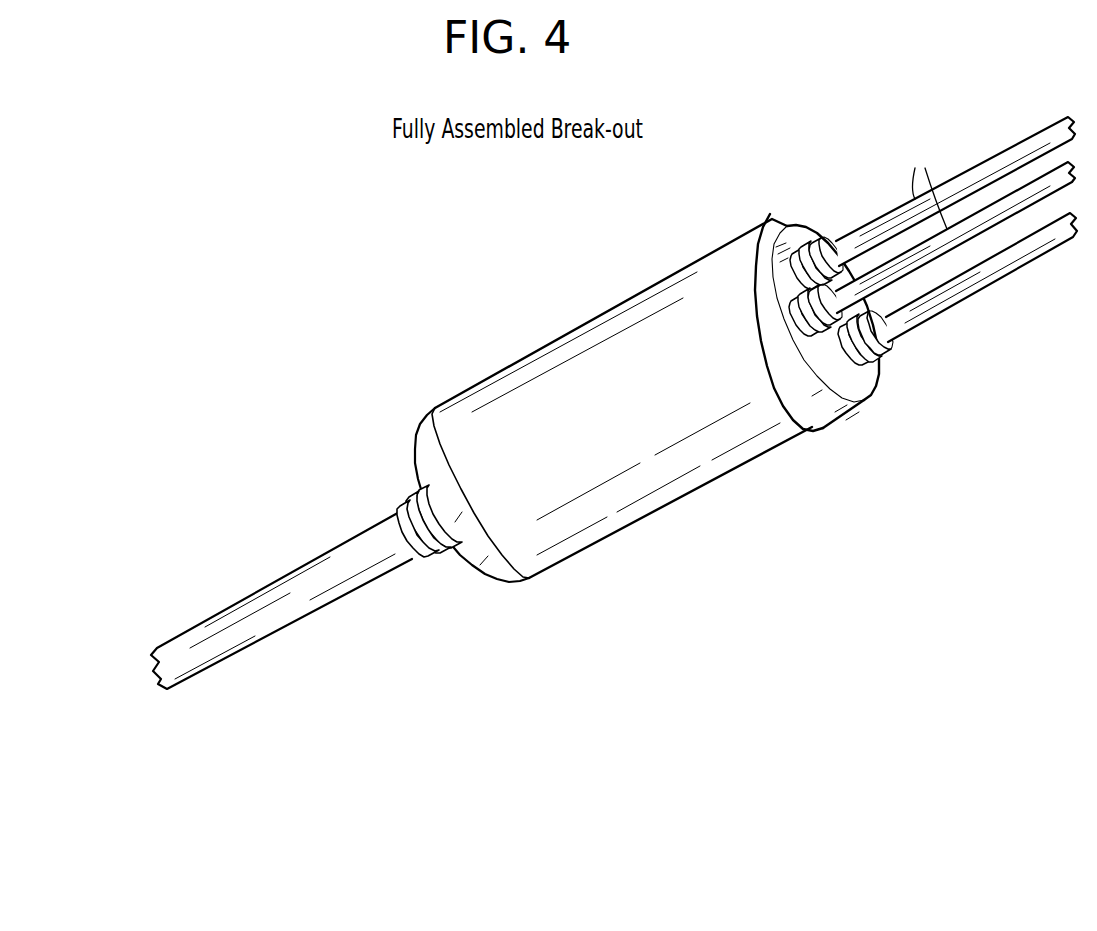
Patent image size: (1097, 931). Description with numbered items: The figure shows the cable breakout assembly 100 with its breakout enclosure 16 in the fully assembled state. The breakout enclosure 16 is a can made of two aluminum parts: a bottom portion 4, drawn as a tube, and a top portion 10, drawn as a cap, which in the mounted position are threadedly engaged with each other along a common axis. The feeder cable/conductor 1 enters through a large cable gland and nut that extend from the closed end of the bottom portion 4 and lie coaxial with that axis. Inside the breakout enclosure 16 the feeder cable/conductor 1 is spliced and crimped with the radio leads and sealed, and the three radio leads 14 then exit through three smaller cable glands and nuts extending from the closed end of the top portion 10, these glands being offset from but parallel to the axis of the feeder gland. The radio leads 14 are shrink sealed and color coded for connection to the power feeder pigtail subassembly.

The feeder conductor wire 1 is at (243, 598).
The bottom portion 4 is at (553, 343).
The top portion 10 is at (747, 235).
The radio leads 14 is at (933, 291).
The breakout enclosure 16 is at (647, 414).
The cable breakout assembly 100 is at (986, 452).